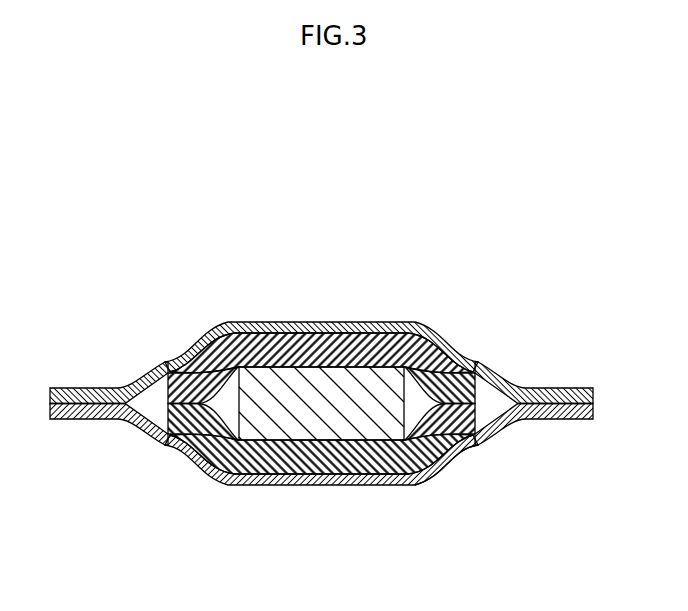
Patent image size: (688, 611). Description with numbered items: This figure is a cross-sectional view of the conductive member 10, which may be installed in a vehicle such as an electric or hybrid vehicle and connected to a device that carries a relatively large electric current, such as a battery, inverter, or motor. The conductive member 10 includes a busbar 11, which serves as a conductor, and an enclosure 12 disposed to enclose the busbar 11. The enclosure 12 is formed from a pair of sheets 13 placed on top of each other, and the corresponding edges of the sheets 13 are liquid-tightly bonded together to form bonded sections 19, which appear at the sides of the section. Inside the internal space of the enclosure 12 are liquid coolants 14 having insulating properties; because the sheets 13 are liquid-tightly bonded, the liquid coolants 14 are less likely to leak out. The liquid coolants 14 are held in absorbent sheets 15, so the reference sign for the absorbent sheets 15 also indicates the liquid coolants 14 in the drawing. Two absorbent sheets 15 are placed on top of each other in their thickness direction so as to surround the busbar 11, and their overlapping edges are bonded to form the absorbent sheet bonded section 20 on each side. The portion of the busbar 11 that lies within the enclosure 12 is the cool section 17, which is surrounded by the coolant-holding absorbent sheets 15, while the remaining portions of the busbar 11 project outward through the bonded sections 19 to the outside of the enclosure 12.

The conductive member 10 is at (457, 277).
The busbar 11 is at (255, 412).
The enclosure 12 is at (250, 321).
The sheets 13 is at (317, 321).
The liquid coolants 14 is at (416, 480).
The absorbent sheets 15 is at (377, 321).
The cool section 17 is at (280, 420).
The bonded sections 19 is at (80, 390).
The absorbent sheet bonded section 20 is at (186, 366).